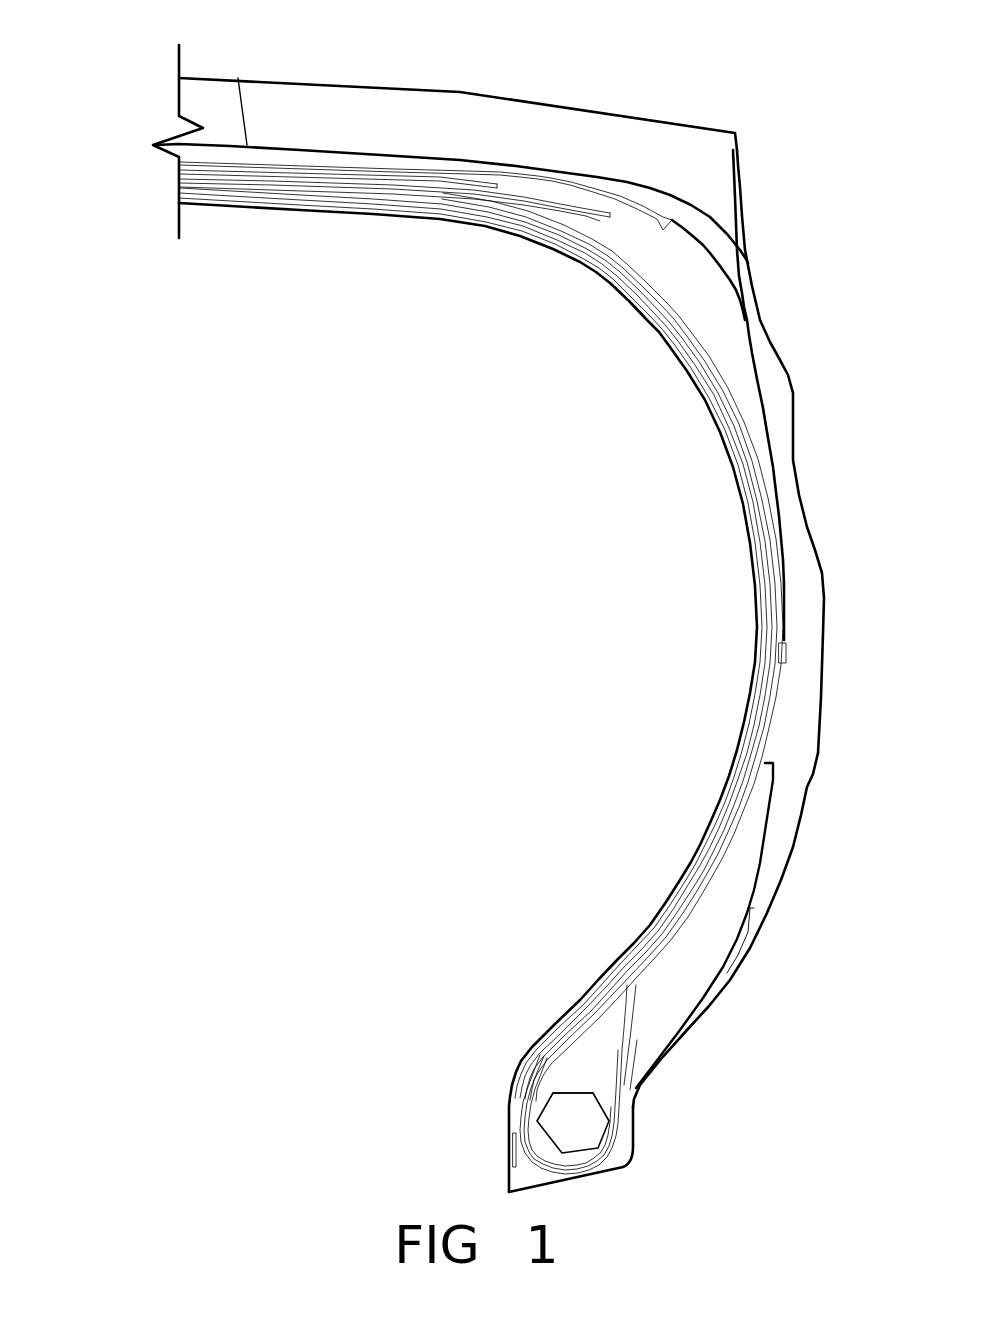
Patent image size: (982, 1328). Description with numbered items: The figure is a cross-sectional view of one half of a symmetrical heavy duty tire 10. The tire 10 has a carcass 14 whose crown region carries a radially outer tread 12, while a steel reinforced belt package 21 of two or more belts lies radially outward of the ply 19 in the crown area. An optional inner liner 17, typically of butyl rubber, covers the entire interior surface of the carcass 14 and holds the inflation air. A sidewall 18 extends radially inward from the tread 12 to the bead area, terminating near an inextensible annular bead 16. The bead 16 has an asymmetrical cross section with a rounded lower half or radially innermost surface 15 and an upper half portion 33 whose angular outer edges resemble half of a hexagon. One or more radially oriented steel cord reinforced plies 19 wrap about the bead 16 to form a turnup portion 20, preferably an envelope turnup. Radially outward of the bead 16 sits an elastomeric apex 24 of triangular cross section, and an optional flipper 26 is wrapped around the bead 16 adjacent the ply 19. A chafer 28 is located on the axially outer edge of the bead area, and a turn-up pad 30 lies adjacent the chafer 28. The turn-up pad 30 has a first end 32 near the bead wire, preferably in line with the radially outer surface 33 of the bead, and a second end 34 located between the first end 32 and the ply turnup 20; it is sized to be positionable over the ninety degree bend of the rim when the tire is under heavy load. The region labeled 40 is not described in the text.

The tire 10 is at (88, 104).
The tread 12 is at (333, 100).
The carcass 14 is at (648, 294).
The rounded outer surface 15 is at (575, 1155).
The bead 16 is at (555, 1130).
The inner liner 17 is at (606, 298).
The sidewall 18 is at (768, 327).
The ply 19 is at (778, 620).
The turnup portion 20 is at (790, 648).
The belt package 21 is at (362, 178).
The apex 24 is at (605, 1018).
The flipper 26 is at (540, 1065).
The chafer 28 is at (707, 998).
The turn-up pad 30 is at (725, 935).
The first end 32 is at (633, 1063).
The upper half portion 33 is at (572, 1093).
The second end 34 is at (755, 823).
The sidewall insert 40 is at (713, 918).